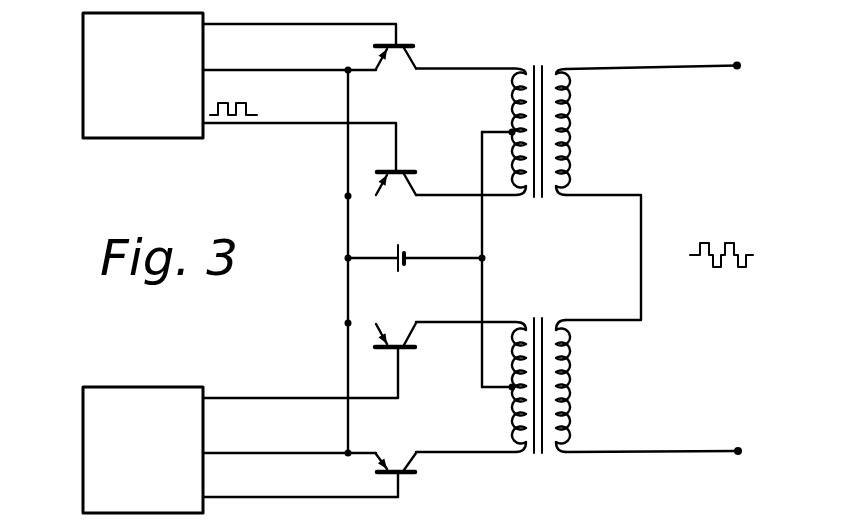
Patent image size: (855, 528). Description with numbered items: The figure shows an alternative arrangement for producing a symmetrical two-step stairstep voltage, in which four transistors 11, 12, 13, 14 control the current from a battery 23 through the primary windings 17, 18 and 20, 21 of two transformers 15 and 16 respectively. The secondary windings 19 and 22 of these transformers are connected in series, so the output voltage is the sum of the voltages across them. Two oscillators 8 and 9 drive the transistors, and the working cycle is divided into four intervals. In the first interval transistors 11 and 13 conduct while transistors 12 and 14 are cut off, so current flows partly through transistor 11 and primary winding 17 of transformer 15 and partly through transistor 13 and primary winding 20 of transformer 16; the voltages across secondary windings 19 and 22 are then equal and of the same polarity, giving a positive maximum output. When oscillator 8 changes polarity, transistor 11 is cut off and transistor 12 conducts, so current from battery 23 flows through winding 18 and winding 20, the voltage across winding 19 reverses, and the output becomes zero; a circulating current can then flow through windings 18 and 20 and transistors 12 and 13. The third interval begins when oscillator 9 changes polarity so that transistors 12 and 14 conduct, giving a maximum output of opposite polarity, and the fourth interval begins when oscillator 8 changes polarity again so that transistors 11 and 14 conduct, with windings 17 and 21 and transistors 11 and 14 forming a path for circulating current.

The oscillator 8 is at (83, 68).
The oscillator 9 is at (83, 452).
The transistor 11 is at (414, 46).
The transistor 12 is at (412, 172).
The transistor 13 is at (409, 350).
The transistor 14 is at (412, 474).
The transformer 15 is at (521, 111).
The transformer 16 is at (521, 365).
The primary winding 17 is at (512, 106).
The primary winding 18 is at (513, 141).
The secondary winding 19 is at (572, 133).
The primary winding 20 is at (513, 362).
The primary winding 21 is at (512, 421).
The secondary winding 22 is at (572, 393).
The battery 23 is at (401, 247).